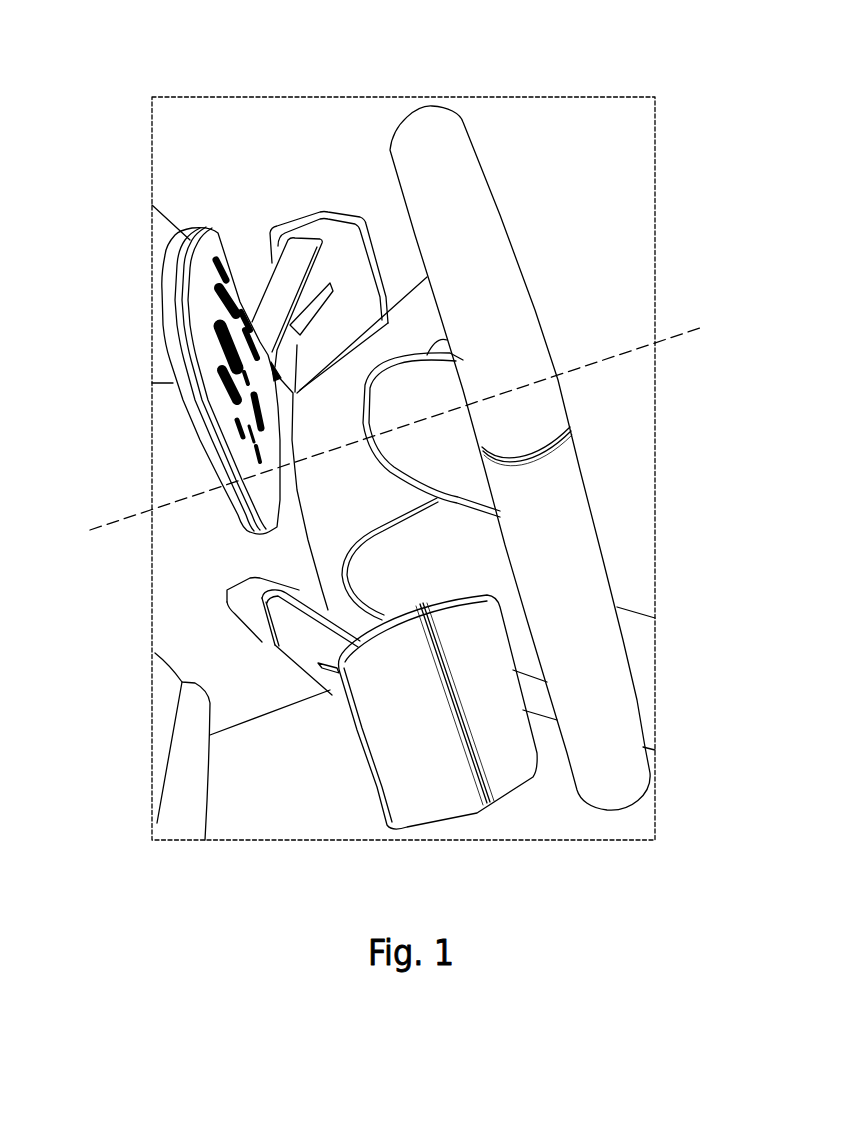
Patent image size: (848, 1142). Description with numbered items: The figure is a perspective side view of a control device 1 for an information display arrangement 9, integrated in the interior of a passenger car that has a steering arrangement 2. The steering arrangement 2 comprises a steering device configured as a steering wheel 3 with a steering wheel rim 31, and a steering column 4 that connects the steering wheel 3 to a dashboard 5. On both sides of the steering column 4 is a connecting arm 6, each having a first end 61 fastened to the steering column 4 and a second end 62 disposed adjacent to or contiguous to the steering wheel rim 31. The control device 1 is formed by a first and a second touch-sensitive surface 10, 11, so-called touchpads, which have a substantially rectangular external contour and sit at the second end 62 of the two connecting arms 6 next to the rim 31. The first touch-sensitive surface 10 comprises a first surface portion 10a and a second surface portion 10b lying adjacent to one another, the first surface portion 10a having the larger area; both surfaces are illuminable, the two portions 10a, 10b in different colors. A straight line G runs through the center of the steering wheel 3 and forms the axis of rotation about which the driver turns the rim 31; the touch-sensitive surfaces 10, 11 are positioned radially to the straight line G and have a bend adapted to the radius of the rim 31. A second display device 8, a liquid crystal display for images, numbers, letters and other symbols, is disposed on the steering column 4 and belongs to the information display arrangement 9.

The control device 1 is at (329, 477).
The steering arrangement 2 is at (561, 88).
The steering wheel 3 is at (560, 458).
The steering wheel rim 31 is at (573, 517).
The steering column 4 is at (177, 430).
The dashboard 5 is at (169, 705).
The connecting arm 6 is at (277, 300).
The first end 61 is at (243, 613).
The second display device 8 is at (171, 380).
The information display arrangement 9 is at (171, 380).
The first touch-sensitive surface 10 is at (468, 758).
The first surface portion 10a is at (457, 777).
The second surface portion 10b is at (515, 770).
The second touch-sensitive surface 11 is at (320, 142).
The second end 62 is at (329, 477).
The straight line G is at (406, 427).